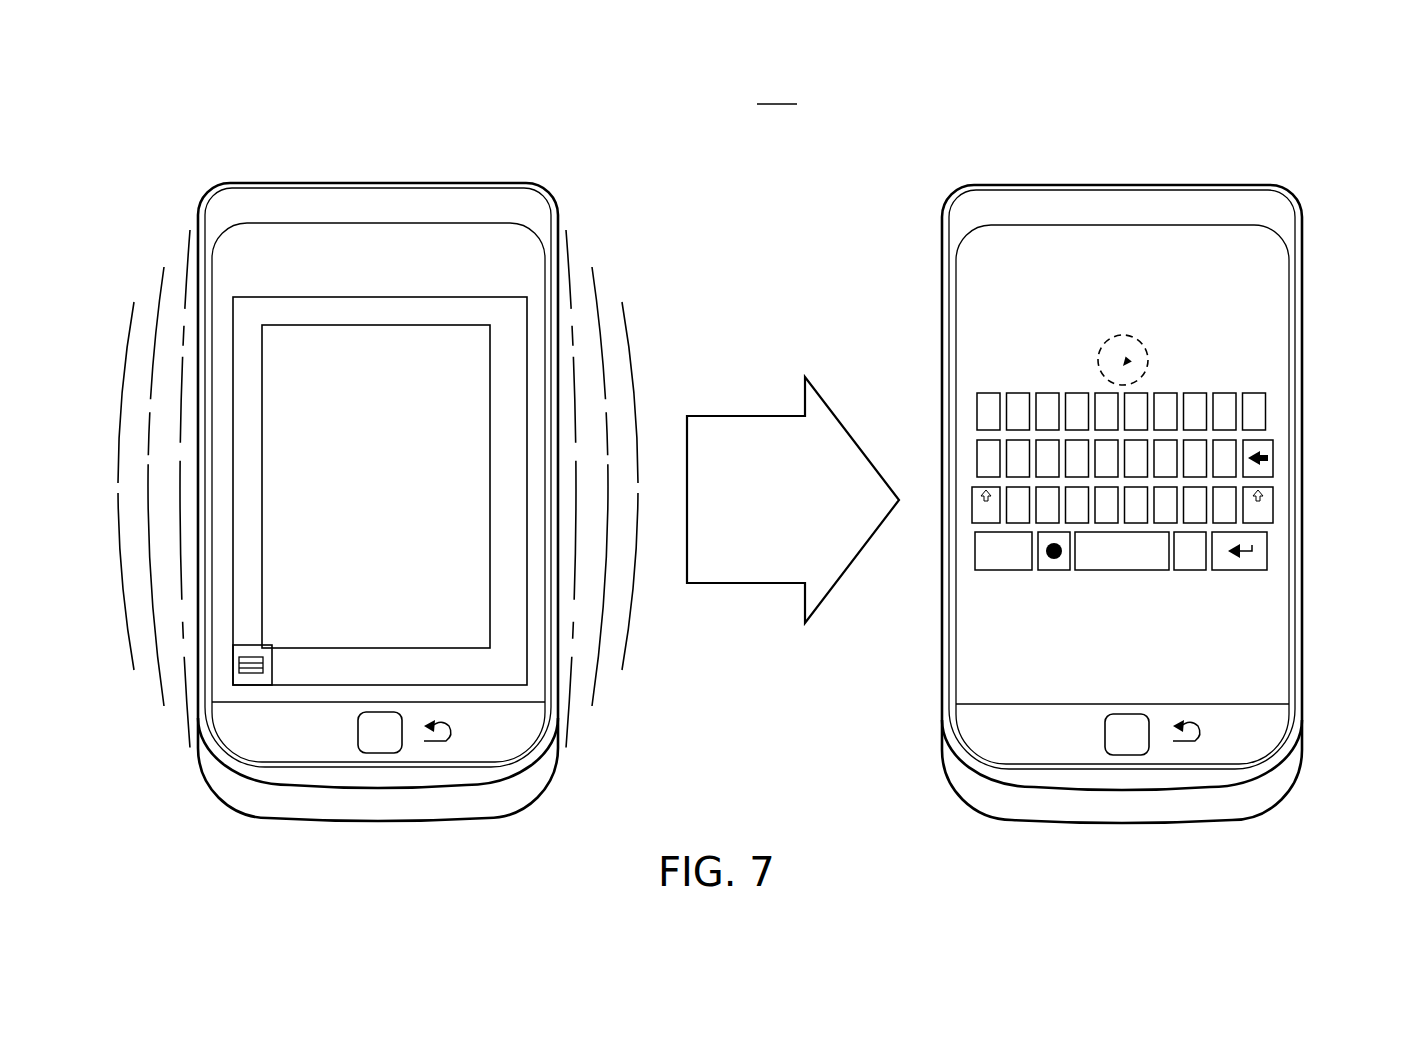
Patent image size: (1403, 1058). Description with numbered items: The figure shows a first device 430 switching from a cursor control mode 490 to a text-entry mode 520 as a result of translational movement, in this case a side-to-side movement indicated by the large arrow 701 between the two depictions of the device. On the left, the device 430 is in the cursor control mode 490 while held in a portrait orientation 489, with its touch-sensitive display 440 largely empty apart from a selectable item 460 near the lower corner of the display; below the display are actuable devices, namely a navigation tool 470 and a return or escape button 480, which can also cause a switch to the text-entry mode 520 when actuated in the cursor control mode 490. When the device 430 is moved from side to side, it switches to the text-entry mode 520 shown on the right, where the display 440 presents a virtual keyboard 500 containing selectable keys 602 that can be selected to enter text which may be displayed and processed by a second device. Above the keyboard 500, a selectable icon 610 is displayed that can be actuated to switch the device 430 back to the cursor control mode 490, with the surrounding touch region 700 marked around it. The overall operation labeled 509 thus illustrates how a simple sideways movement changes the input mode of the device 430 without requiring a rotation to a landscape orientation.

The first device 430 is at (756, 461).
The touch-sensitive display 440 is at (527, 298).
The selectable item 460 is at (252, 682).
The navigation tool 470 is at (380, 753).
The return or escape button 480 is at (438, 741).
The portrait orientation 489 is at (427, 115).
The cursor control mode 490 is at (336, 98).
The virtual keyboard 500 is at (1133, 445).
The keyboard display operation 509 is at (779, 91).
The text-entry mode 520 is at (1099, 146).
The selectable key 602 is at (990, 393).
The selectable icon 610 is at (1127, 359).
The cursor position indicator 700 is at (1150, 360).
The side-to-side motion arrow 701 is at (750, 363).